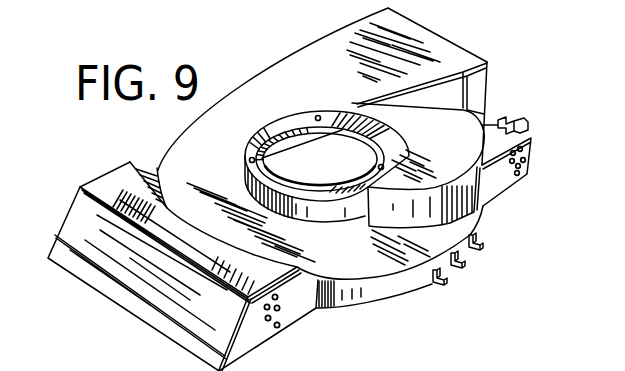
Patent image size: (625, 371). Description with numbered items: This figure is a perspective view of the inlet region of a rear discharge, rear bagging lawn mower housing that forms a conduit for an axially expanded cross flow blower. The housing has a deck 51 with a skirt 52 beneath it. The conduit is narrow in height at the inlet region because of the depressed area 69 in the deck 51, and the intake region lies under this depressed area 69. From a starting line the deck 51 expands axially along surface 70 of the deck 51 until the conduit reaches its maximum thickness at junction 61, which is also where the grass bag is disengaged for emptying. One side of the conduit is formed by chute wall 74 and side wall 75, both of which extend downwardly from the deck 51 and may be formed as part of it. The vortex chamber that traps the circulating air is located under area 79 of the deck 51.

The deck 51 is at (125, 201).
The skirt 52 is at (378, 298).
The junction 61 is at (488, 66).
The depressed area 69 is at (361, 260).
The surface 70 is at (323, 93).
The chute wall 74 is at (446, 95).
The side wall 75 is at (419, 277).
The area of deck 79 is at (456, 153).